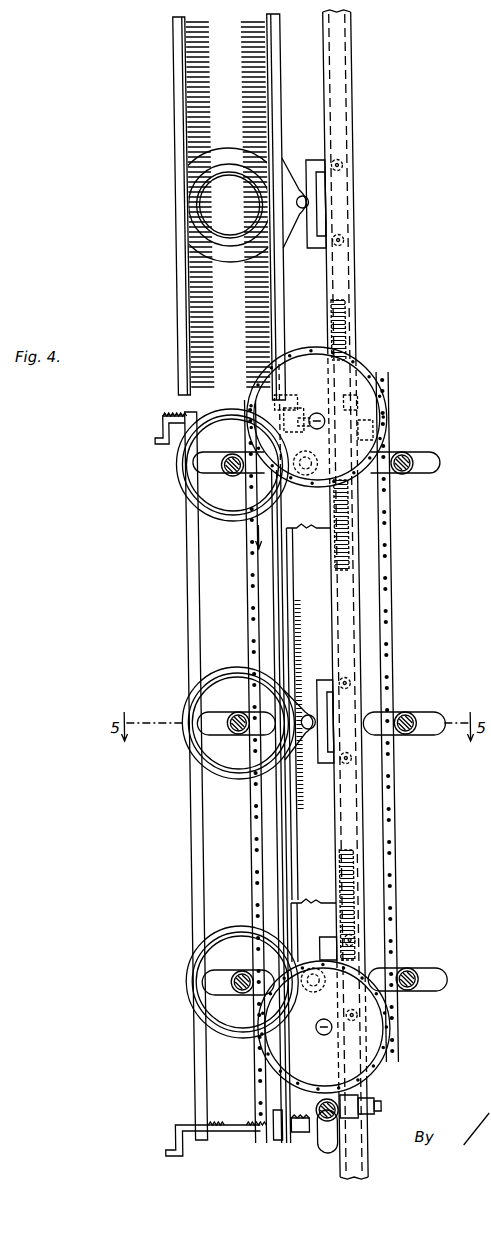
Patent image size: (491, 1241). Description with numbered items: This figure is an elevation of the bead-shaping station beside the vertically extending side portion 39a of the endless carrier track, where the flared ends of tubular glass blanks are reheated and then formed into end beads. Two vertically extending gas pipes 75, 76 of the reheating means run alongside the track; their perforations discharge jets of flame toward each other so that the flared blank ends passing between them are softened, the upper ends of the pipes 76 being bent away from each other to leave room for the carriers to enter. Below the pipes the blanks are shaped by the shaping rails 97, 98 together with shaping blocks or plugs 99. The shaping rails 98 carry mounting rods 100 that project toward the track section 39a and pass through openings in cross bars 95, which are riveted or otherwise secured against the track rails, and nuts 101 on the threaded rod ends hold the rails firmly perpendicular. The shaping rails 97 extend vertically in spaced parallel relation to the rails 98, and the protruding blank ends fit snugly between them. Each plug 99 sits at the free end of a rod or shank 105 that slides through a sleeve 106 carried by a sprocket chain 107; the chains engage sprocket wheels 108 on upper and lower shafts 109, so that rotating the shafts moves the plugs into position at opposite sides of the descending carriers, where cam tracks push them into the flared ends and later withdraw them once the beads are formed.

The side portion of the track 39a is at (356, 148).
The pipe 75 is at (186, 258).
The pipe 76 is at (284, 158).
The cross bar 95 is at (391, 417).
The shaping rail 97 is at (187, 1073).
The shaping rail 98 is at (274, 1097).
The shaping block or plug 99 is at (224, 470).
The mounting rod 100 is at (296, 435).
The nut 101 is at (392, 428).
The rod or shank 105 is at (233, 476).
The sleeve 106 is at (201, 448).
The sprocket chain 107 is at (357, 392).
The sprocket wheel 108 is at (379, 398).
The shaft 109 is at (325, 415).